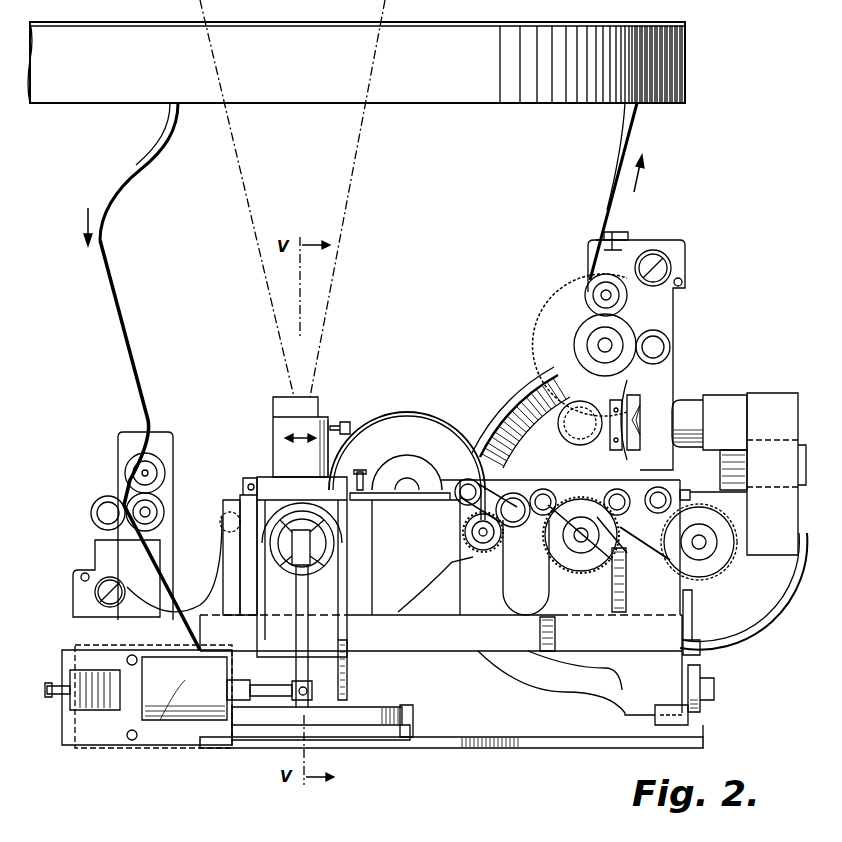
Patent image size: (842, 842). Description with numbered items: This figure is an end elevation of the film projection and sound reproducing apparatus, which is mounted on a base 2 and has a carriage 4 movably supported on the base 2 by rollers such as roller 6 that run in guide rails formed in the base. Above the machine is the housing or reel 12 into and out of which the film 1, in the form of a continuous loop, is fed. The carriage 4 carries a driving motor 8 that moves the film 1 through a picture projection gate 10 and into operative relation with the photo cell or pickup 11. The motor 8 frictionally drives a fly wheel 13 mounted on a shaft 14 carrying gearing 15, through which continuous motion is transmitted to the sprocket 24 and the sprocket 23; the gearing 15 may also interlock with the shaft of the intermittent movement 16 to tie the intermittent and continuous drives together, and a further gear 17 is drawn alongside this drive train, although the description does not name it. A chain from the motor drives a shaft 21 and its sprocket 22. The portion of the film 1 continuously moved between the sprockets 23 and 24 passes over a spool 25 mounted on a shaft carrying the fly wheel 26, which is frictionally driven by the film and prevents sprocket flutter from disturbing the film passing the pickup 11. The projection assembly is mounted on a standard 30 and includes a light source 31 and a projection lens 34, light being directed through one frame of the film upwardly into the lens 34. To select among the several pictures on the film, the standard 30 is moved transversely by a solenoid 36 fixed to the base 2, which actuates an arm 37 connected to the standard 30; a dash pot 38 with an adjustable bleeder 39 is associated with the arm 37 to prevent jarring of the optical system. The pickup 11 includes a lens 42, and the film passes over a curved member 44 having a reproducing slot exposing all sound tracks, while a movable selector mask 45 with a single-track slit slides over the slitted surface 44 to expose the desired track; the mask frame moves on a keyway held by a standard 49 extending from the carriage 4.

The film 1 is at (118, 296).
The base 2 is at (576, 740).
The carriage 4 is at (458, 642).
The roller 6 is at (714, 705).
The driving motor 8 is at (405, 440).
The picture projection gate 10 is at (413, 533).
The photo cell or pickup 11 is at (760, 398).
The housing or reel 12 is at (465, 95).
The fly wheel 13 is at (520, 397).
The shaft 14 is at (583, 542).
The gearing 15 is at (622, 580).
The intermittent movement 16 is at (533, 587).
The gear 17 is at (483, 550).
The shaft 21 is at (108, 500).
The sprocket 22 is at (165, 508).
The sprocket 23 is at (612, 548).
The sprocket 24 is at (575, 365).
The spool or pulley 25 is at (710, 570).
The fly wheel 26 is at (750, 625).
The standard 30 is at (354, 692).
The light source 31 is at (330, 505).
The projection lens 34 is at (275, 412).
The solenoid 36 is at (180, 722).
The arm 37 is at (292, 698).
The dash pot 38 is at (98, 712).
The adjustable bleeder 39 is at (58, 697).
The lens 42 is at (722, 402).
The curved member 44 is at (636, 398).
The selector mask 45 is at (640, 428).
The standard 49 is at (670, 471).